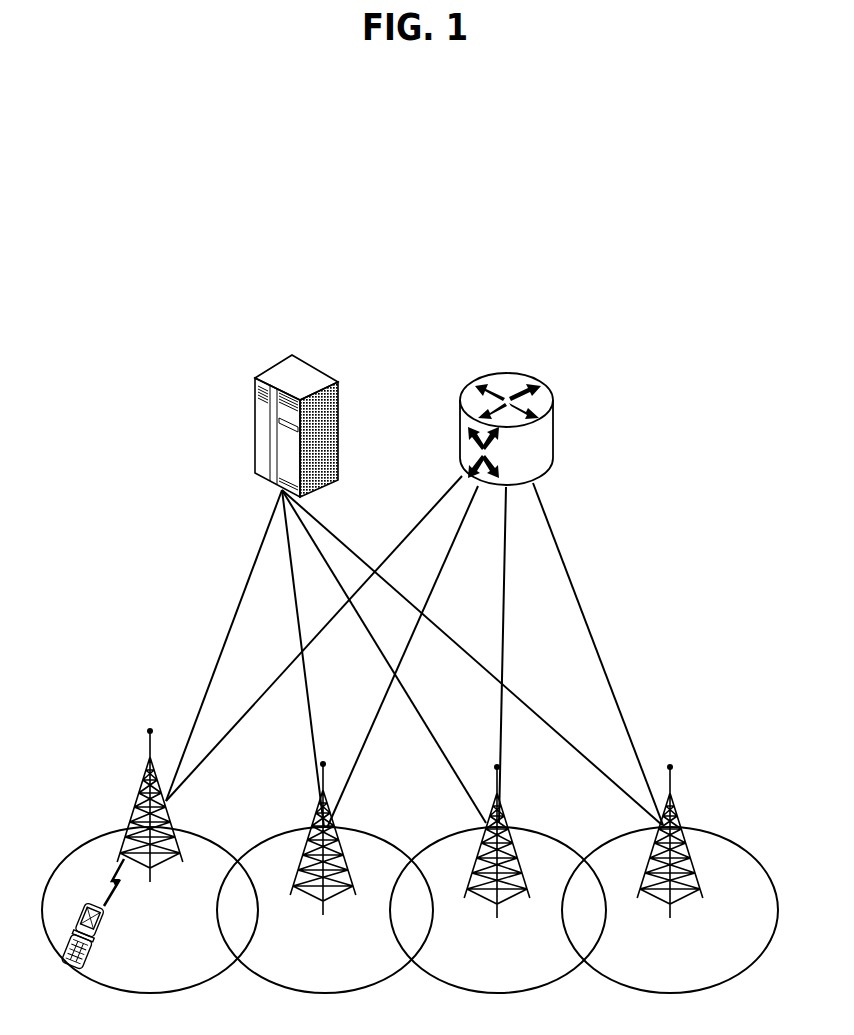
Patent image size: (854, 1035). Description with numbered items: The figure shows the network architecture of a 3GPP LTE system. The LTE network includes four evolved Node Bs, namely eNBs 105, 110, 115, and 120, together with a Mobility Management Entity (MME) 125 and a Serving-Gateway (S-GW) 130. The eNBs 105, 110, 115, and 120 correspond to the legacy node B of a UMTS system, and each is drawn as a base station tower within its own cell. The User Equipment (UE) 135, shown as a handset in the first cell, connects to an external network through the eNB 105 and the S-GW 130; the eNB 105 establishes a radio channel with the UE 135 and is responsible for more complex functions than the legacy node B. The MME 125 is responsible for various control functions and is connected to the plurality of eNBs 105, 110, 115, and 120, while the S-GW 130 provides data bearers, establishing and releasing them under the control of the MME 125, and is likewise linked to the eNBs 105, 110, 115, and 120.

The evolved Node B 105 is at (138, 783).
The evolved Node B 110 is at (315, 808).
The evolved Node B 115 is at (505, 812).
The evolved Node B 120 is at (678, 812).
The Mobility Management Entity 125 is at (282, 375).
The Serving-Gateway 130 is at (505, 382).
The User Equipment 135 is at (106, 932).